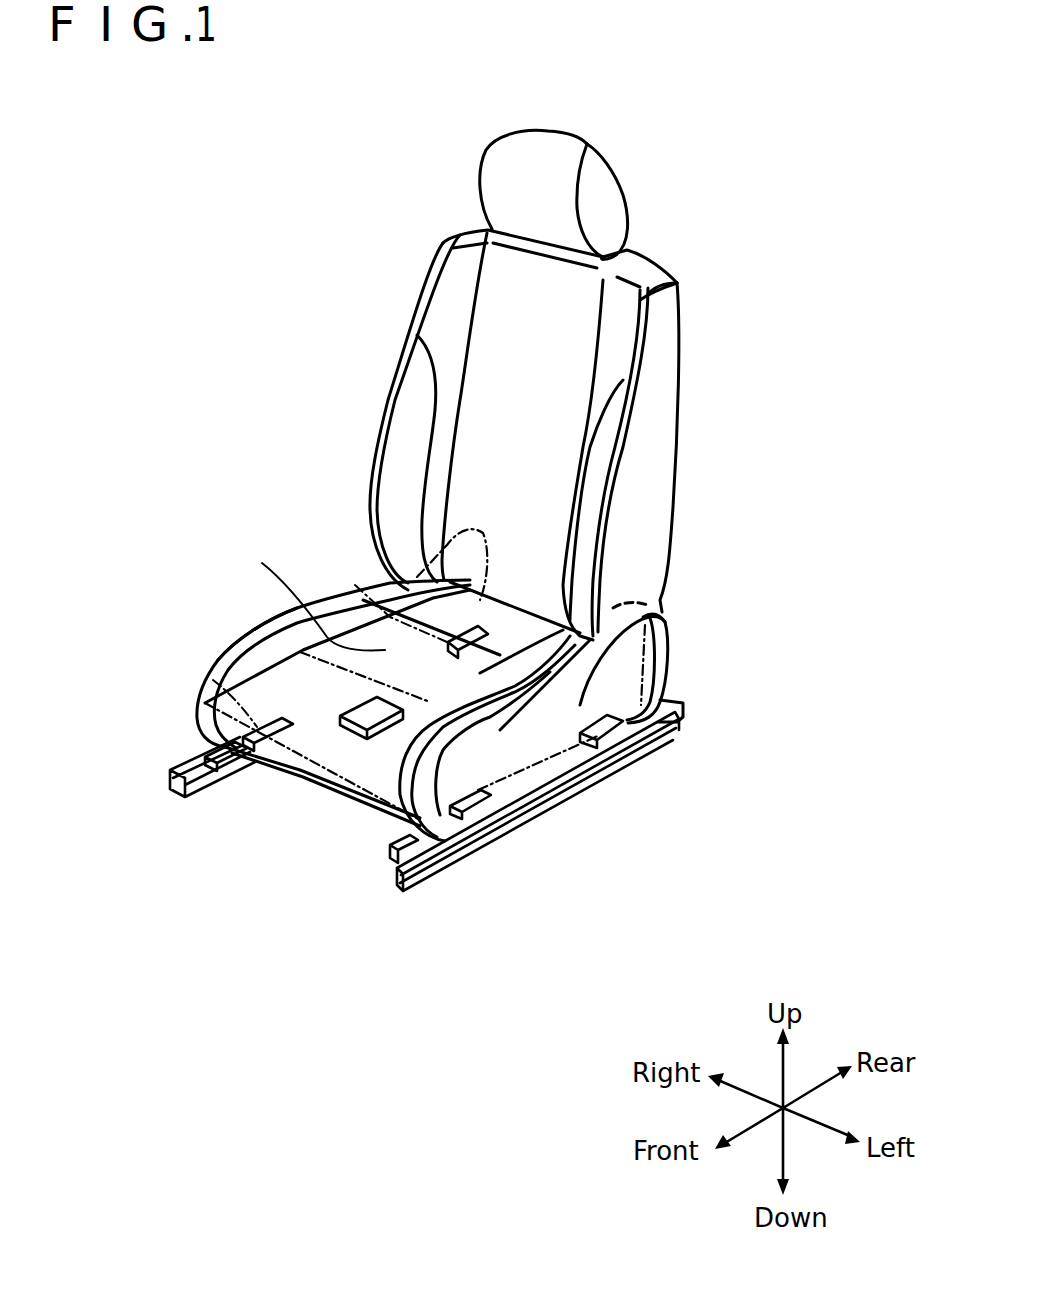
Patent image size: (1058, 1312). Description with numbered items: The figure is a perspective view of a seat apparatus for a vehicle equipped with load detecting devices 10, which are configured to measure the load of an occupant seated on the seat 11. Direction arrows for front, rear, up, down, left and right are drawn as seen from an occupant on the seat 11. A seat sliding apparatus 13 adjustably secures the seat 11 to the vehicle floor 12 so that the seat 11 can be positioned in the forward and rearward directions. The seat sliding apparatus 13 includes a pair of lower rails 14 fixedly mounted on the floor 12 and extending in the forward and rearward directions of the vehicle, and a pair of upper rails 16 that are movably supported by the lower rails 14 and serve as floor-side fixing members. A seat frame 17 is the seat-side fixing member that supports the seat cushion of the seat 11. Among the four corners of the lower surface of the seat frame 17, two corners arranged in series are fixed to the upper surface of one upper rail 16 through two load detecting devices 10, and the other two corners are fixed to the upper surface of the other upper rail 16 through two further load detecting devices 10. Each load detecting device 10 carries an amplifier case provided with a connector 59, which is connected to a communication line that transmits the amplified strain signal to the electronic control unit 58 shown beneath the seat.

The load detecting device 10 is at (223, 678).
The seat 11 is at (257, 601).
The vehicle floor 12 is at (624, 917).
The seat sliding apparatus 13 is at (460, 886).
The lower rails 14 is at (170, 783).
The upper rails 16 is at (213, 753).
The seat frame 17 is at (310, 760).
The electronic control unit 58 is at (370, 720).
The connector 59 is at (256, 728).